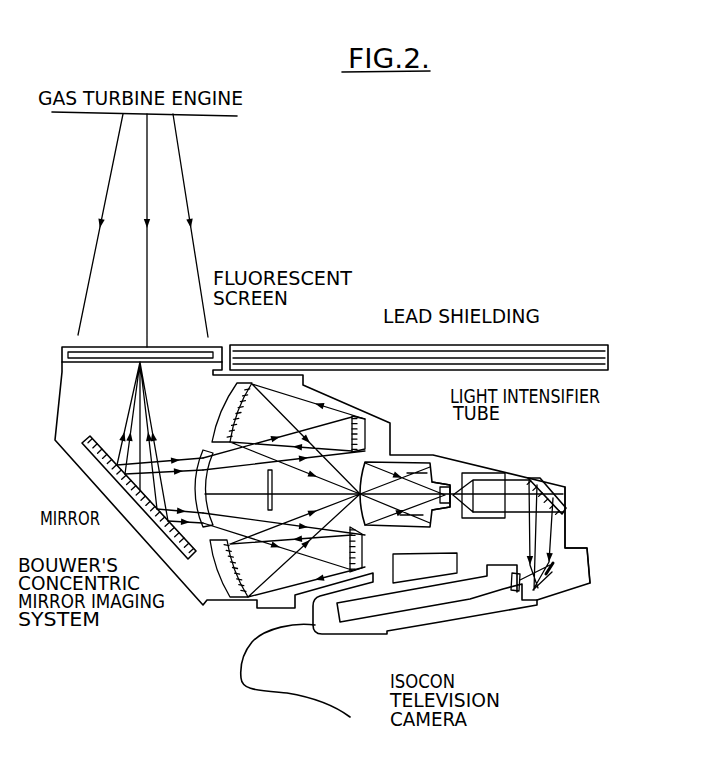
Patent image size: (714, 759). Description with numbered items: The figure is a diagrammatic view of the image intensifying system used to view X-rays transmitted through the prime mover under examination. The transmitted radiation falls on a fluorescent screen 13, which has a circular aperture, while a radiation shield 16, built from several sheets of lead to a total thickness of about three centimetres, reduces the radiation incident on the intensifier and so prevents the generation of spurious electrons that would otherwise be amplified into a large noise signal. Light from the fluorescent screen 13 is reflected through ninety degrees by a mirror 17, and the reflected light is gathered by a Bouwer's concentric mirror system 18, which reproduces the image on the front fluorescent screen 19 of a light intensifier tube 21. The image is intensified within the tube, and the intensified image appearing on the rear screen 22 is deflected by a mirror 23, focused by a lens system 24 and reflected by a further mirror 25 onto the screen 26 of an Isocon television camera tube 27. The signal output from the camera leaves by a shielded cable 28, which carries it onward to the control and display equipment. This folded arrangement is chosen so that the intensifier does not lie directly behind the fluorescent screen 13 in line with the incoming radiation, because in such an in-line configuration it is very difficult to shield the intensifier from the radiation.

The fluorescent screen 13 is at (222, 347).
The radiation shield 16 is at (338, 345).
The mirror 17 is at (120, 491).
The Bouwer's concentric mirror system 18 is at (228, 578).
The front fluorescent screen 19 is at (363, 465).
The light intensifier tube 21 is at (432, 468).
The rear screen 22 is at (435, 458).
The mirror 23 is at (543, 483).
The lens system 24 is at (565, 539).
The further mirror 25 is at (547, 575).
The screen 26 is at (512, 593).
The Isocon television camera tube 27 is at (387, 615).
The shielded cable 28 is at (240, 683).